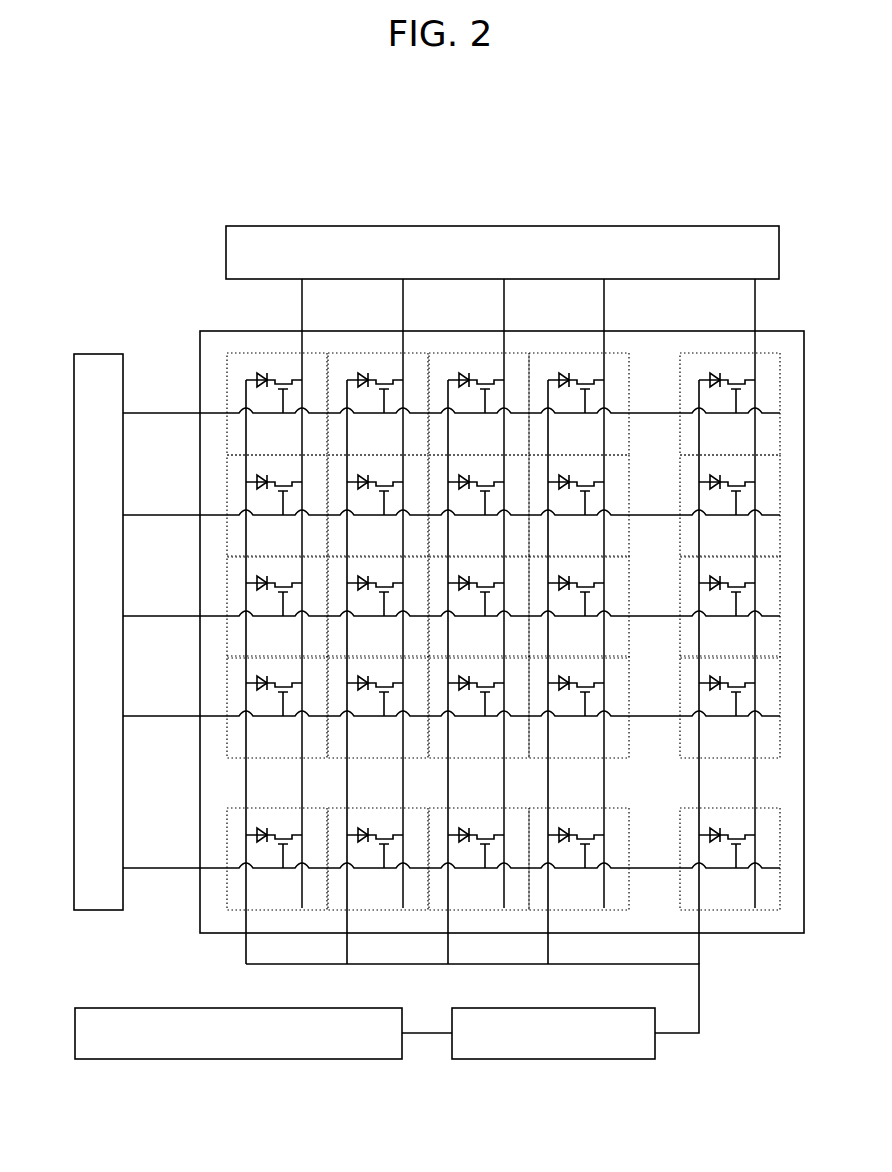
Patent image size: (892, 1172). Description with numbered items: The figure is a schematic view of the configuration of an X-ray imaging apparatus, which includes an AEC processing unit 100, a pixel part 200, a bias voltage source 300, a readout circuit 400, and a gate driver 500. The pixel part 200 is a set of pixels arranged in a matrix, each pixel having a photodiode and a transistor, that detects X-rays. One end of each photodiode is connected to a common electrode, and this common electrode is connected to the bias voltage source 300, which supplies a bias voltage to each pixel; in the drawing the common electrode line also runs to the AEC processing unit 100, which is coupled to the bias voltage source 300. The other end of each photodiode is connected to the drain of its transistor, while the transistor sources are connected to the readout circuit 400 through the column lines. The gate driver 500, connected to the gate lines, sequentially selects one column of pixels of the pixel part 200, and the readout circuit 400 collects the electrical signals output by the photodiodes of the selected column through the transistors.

The AEC processing unit 100 is at (580, 1060).
The pixel part 200 is at (212, 331).
The bias voltage source 300 is at (337, 1060).
The readout circuit 400 is at (300, 226).
The gate driver 500 is at (107, 354).